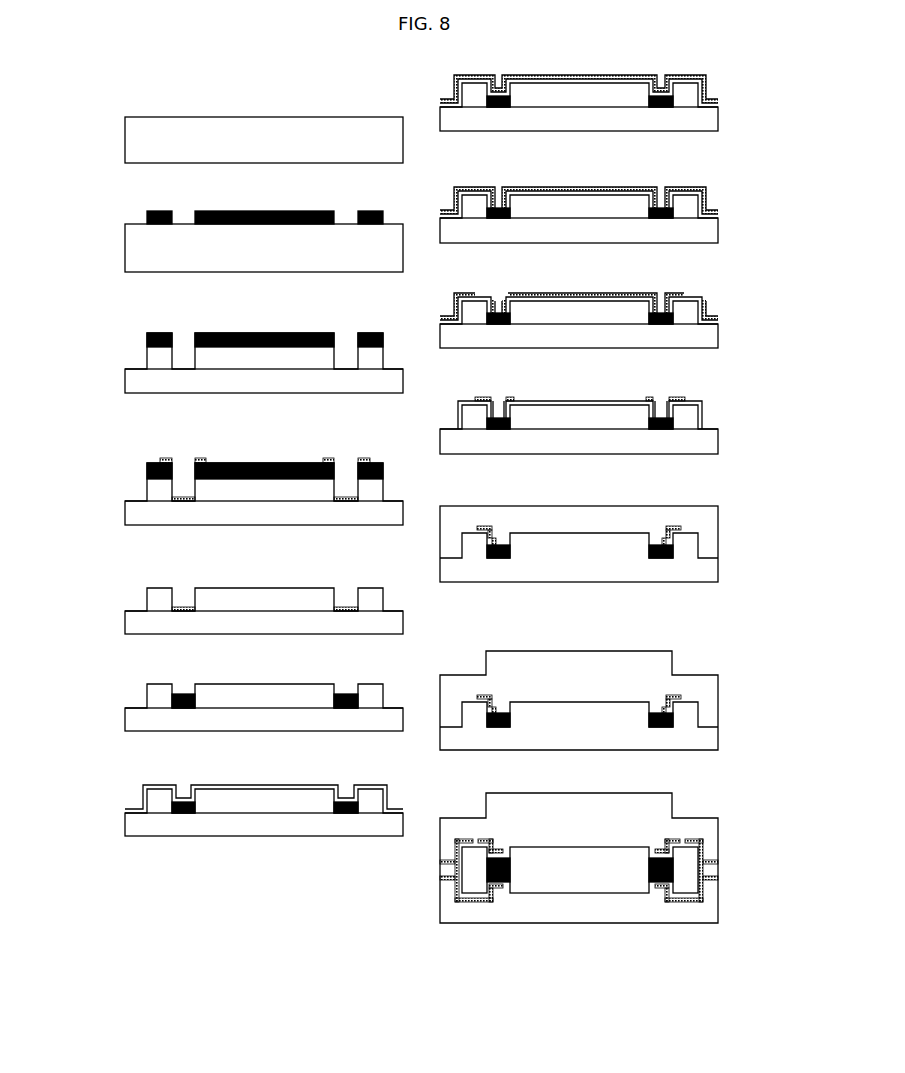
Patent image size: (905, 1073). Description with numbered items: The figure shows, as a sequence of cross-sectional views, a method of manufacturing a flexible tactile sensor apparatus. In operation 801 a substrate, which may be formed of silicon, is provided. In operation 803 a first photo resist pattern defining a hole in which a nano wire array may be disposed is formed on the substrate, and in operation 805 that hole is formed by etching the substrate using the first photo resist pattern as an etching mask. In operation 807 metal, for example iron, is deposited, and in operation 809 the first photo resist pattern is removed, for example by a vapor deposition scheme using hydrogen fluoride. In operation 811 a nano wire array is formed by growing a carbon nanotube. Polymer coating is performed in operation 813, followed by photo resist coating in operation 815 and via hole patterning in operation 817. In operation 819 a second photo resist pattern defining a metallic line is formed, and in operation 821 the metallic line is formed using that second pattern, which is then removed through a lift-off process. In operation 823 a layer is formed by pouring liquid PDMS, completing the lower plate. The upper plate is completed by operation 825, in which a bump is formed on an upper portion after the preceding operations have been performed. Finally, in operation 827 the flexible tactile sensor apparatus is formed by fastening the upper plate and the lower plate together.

The substrate providing operation 801 is at (125, 135).
The first photo resist pattern forming operation 803 is at (125, 243).
The hole forming operation 805 is at (125, 376).
The metal depositing operation 807 is at (125, 508).
The first photo resist pattern removing operation 809 is at (125, 618).
The nano wire array forming operation 811 is at (125, 714).
The polymer coating operation 813 is at (125, 821).
The PR coating operation 815 is at (718, 111).
The via hole patterning operation 817 is at (718, 219).
The second photo resist pattern forming operation 819 is at (718, 326).
The metallic line forming operation 821 is at (718, 434).
The PDMS layer forming operation 823 is at (718, 531).
The bump forming operation 825 is at (718, 704).
The plate fastening operation 827 is at (718, 836).